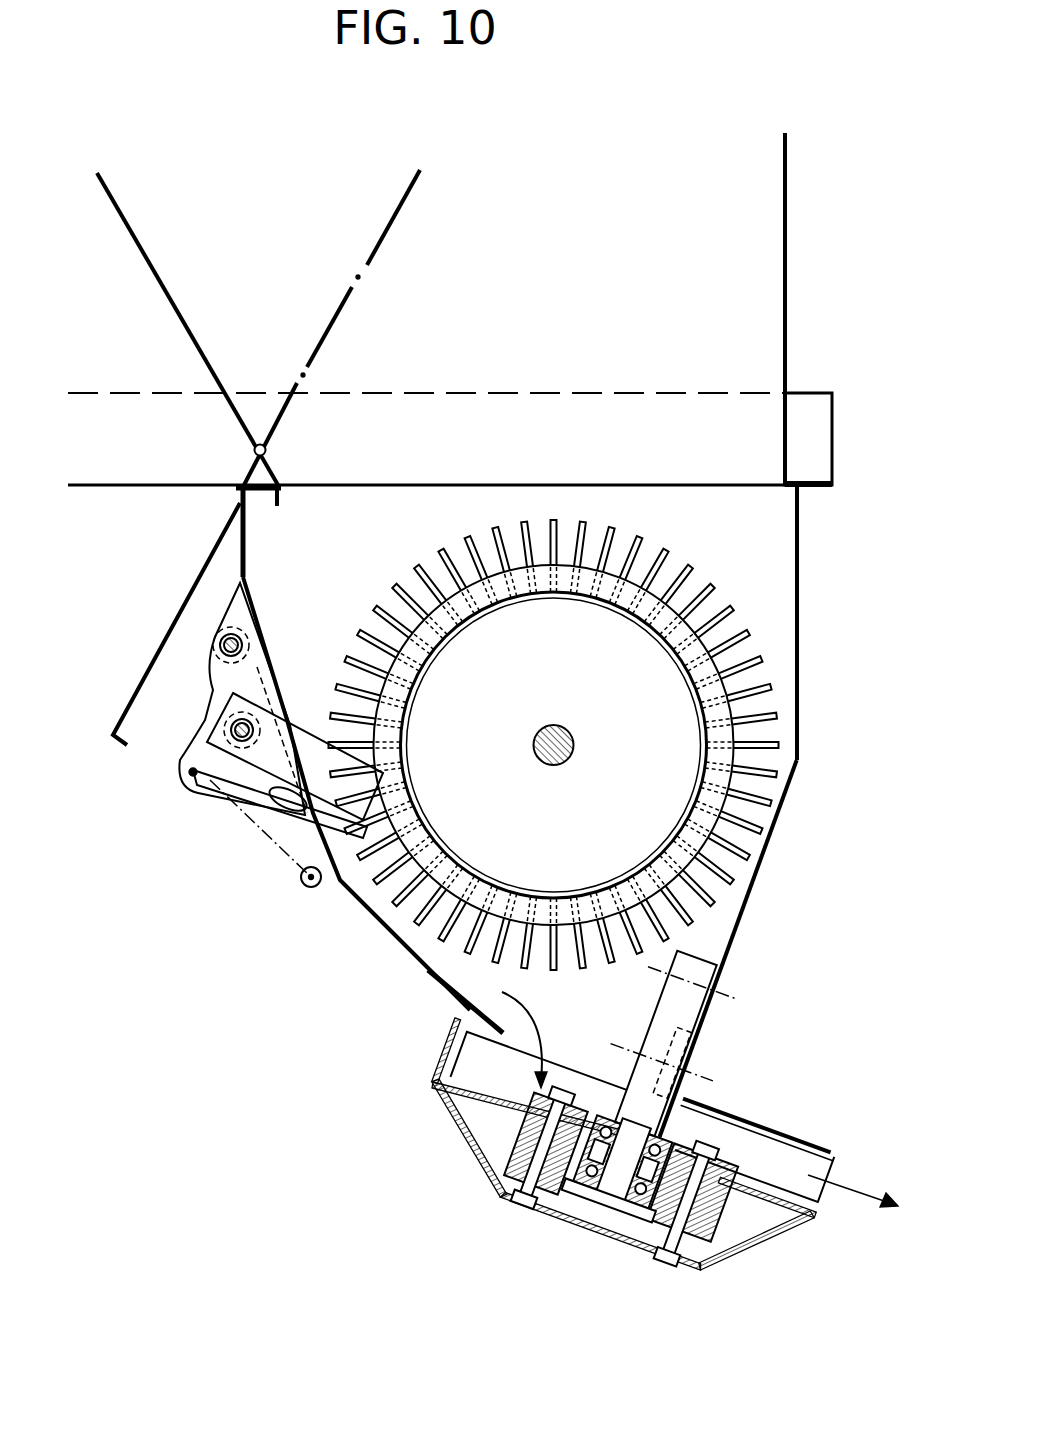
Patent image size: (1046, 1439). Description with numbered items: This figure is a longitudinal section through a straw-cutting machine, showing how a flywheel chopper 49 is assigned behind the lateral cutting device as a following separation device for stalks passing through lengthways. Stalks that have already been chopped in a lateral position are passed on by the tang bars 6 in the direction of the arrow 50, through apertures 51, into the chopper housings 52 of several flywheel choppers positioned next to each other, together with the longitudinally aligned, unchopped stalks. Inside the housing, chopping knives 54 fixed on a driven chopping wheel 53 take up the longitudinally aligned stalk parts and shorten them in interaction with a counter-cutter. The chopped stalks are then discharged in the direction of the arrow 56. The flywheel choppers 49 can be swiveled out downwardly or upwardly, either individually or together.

The tang bars 6 is at (407, 932).
The flywheel chopper 49 is at (720, 970).
The arrow 50 is at (470, 1013).
The apertures 51 is at (588, 1031).
The chopper housings 52 is at (467, 1110).
The chopping wheel 53 is at (768, 1178).
The chopping knives 54 is at (710, 1137).
The arrow 56 is at (832, 1188).